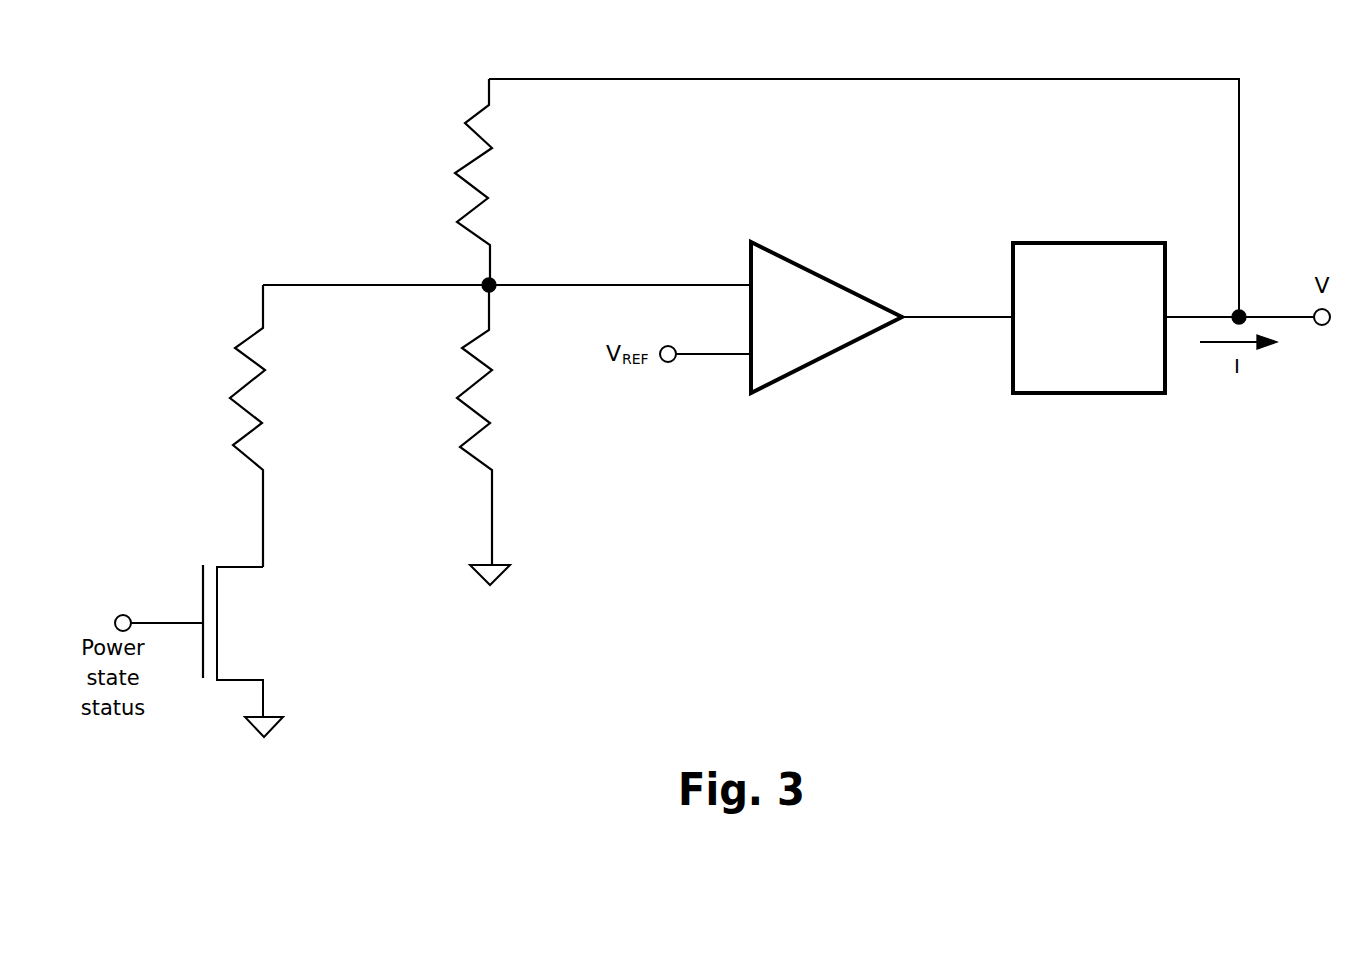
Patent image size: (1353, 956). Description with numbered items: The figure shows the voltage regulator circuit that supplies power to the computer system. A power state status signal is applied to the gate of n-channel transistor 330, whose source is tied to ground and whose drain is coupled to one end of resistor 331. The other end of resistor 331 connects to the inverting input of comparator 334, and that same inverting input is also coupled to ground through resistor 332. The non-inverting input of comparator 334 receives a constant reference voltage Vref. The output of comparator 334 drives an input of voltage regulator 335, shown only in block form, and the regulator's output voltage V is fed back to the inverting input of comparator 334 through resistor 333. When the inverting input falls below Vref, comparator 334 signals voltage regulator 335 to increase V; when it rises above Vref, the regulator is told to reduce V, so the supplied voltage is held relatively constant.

The n-channel transistor 330 is at (263, 622).
The resistor 331 is at (277, 397).
The resistor 332 is at (488, 397).
The resistor 333 is at (450, 153).
The comparator 334 is at (826, 317).
The voltage regulator 335 is at (1089, 318).